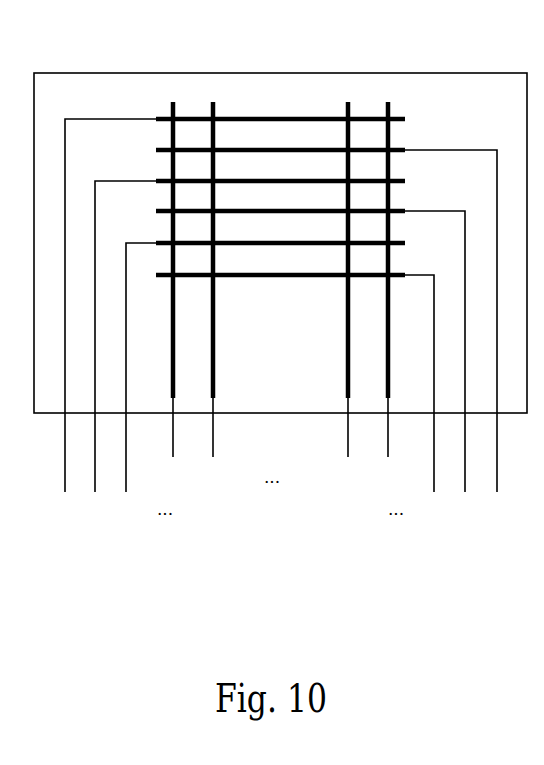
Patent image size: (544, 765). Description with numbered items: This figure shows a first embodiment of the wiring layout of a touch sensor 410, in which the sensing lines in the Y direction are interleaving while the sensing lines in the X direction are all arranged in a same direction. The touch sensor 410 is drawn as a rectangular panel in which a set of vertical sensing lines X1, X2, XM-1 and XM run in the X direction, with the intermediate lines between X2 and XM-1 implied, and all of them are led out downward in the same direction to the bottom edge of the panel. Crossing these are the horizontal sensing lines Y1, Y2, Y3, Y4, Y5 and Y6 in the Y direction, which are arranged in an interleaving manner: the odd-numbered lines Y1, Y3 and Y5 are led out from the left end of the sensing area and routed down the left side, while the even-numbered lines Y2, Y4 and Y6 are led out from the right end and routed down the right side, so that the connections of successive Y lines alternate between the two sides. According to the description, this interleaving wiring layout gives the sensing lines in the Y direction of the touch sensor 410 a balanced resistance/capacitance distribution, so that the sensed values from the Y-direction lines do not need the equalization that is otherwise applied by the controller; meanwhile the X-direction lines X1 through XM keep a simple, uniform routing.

The touch sensor 410 is at (279, 73).
The sensing line in the X direction X1 is at (171, 294).
The sensing line in the X direction X2 is at (211, 294).
The sensing line in the X direction XM-1 is at (343, 294).
The sensing line in the X direction XM is at (392, 294).
The sensing line in the Y direction Y1 is at (228, 319).
The sensing line in the Y direction Y2 is at (331, 334).
The sensing line in the Y direction Y3 is at (244, 350).
The sensing line in the Y direction Y4 is at (316, 365).
The sensing line in the Y direction Y5 is at (259, 381).
The sensing line in the Y direction Y6 is at (300, 397).